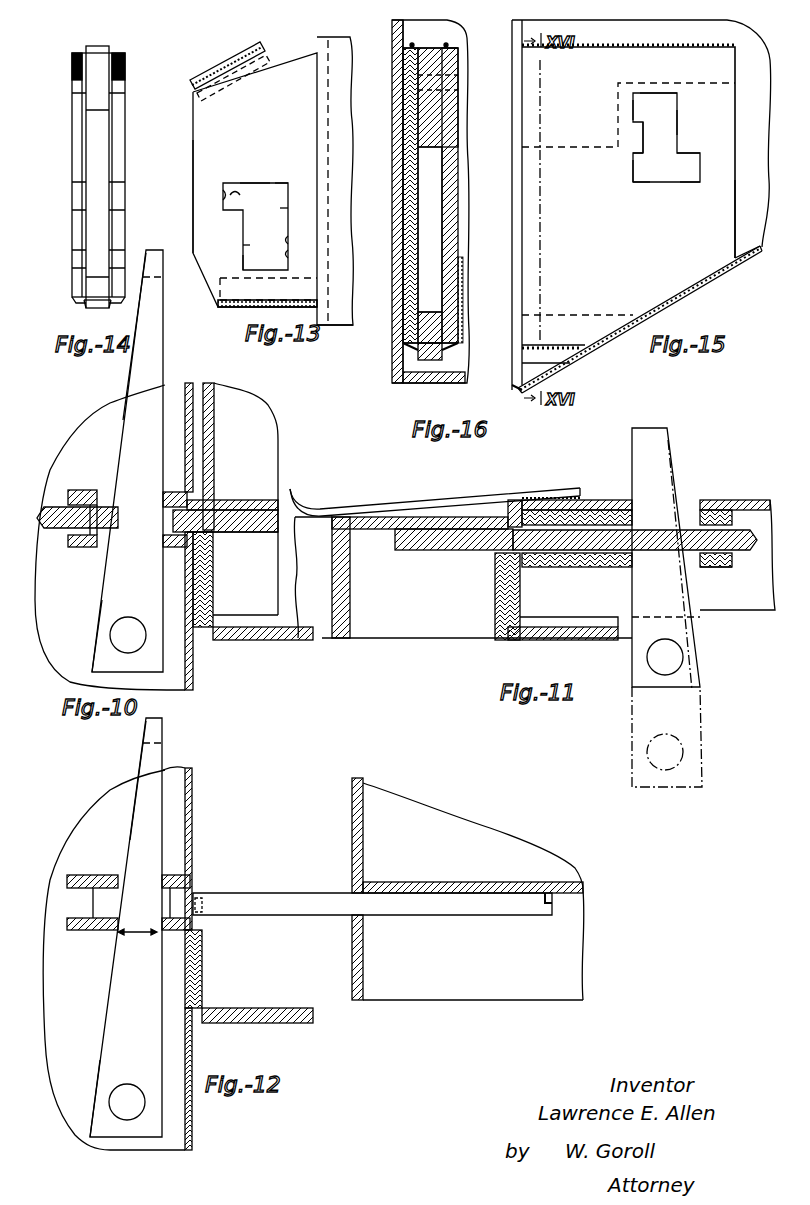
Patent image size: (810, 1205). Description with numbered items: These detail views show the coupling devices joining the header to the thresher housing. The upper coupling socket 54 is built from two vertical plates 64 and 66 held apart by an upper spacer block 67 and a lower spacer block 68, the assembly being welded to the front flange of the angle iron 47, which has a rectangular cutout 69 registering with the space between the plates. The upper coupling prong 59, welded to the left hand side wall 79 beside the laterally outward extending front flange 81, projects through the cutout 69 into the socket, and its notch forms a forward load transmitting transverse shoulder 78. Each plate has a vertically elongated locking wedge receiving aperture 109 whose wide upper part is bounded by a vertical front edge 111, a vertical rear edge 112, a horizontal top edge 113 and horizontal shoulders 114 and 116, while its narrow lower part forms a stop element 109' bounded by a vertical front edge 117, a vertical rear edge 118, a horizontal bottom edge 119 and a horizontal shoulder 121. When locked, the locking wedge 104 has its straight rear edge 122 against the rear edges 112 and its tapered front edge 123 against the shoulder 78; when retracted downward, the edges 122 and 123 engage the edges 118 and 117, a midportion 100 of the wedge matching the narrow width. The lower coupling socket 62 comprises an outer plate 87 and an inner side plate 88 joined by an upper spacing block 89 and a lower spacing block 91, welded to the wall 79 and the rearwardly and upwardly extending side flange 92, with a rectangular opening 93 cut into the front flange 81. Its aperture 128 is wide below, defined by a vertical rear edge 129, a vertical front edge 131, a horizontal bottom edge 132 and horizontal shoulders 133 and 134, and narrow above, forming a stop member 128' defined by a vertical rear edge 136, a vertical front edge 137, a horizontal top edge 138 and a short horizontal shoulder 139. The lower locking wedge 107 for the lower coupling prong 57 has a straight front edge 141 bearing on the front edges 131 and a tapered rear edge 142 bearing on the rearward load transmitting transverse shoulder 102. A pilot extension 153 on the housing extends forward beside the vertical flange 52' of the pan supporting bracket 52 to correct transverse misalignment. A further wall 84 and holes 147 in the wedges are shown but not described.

In FIG. 13, the angle iron 47 is at (340, 313).
In FIG. 10, the angle iron 47 is at (222, 641).
In FIG. 11, the angle iron 47 is at (537, 641).
In FIG. 12, the angle iron 47 is at (281, 1024).
In FIG. 11, the pan supporting bracket 52 is at (463, 577).
In FIG. 11, the vertical flange 52' is at (427, 499).
In FIG. 14, the upper coupling socket 54 is at (193, 153).
In FIG. 13, the upper coupling socket 54 is at (255, 189).
In FIG. 10, the upper coupling socket 54 is at (92, 488).
In FIG. 12, the upper coupling socket 54 is at (113, 870).
In FIG. 11, the lower coupling prong 57 is at (432, 550).
In FIG. 10, the upper coupling prong 59 is at (47, 530).
In FIG. 12, the upper coupling prong 59 is at (279, 915).
In FIG. 16, the lower coupling socket 62 is at (497, 242).
In FIG. 15, the lower coupling socket 62 is at (682, 276).
In FIG. 11, the lower coupling socket 62 is at (712, 570).
In FIG. 14, the vertical plate 64 is at (125, 118).
In FIG. 13, the vertical plate 64 is at (193, 190).
In FIG. 10, the vertical plate 64 is at (78, 549).
In FIG. 12, the vertical plate 64 is at (73, 931).
In FIG. 14, the vertical plate 66 is at (72, 118).
In FIG. 10, the vertical plate 66 is at (68, 493).
In FIG. 12, the vertical plate 66 is at (75, 875).
In FIG. 14, the upper spacer block 67 is at (104, 46).
In FIG. 13, the upper spacer block 67 is at (232, 63).
In FIG. 14, the lower spacer block 68 is at (86, 302).
In FIG. 13, the lower spacer block 68 is at (224, 306).
In FIG. 13, the rectangular cutout 69 is at (328, 242).
In FIG. 10, the rectangular cutout 69 is at (205, 530).
In FIG. 12, the rectangular cutout 69 is at (194, 911).
In FIG. 10, the transverse shoulder 78 is at (112, 518).
In FIG. 16, the left hand side wall 79 is at (393, 275).
In FIG. 15, the left hand side wall 79 is at (767, 137).
In FIG. 10, the left hand side wall 79 is at (252, 500).
In FIG. 11, the left hand side wall 79 is at (749, 500).
In FIG. 12, the left hand side wall 79 is at (405, 882).
In FIG. 15, the front flange 81 is at (512, 118).
In FIG. 10, the front flange 81 is at (214, 595).
In FIG. 11, the front flange 81 is at (520, 601).
In FIG. 12, the front flange 81 is at (364, 982).
In FIG. 12, the wall 84 is at (364, 841).
In FIG. 16, the outer plate 87 is at (448, 205).
In FIG. 15, the outer plate 87 is at (732, 222).
In FIG. 11, the outer plate 87 is at (722, 567).
In FIG. 16, the inner side plate 88 is at (404, 216).
In FIG. 11, the inner side plate 88 is at (713, 510).
In FIG. 16, the upper spacing block 89 is at (431, 48).
In FIG. 15, the upper spacing block 89 is at (568, 148).
In FIG. 16, the lower spacing block 91 is at (446, 352).
In FIG. 15, the lower spacing block 91 is at (568, 357).
In FIG. 16, the side flange 92 is at (411, 384).
In FIG. 15, the side flange 92 is at (752, 256).
In FIG. 15, the rectangular opening 93 is at (512, 312).
In FIG. 12, the midportion 100 is at (135, 935).
In FIG. 11, the transverse shoulder 102 is at (682, 540).
In FIG. 10, the locking wedge 104 is at (103, 610).
In FIG. 12, the locking wedge 104 is at (103, 1046).
In FIG. 11, the lower locking wedge 107 is at (695, 706).
In FIG. 13, the locking wedge receiving aperture 109 is at (250, 226).
In FIG. 13, the stop element 109' is at (226, 262).
In FIG. 13, the vertical front edge 111 is at (223, 197).
In FIG. 13, the vertical rear edge 112 is at (289, 185).
In FIG. 13, the horizontal top edge 113 is at (253, 183).
In FIG. 13, the horizontal shoulder 114 is at (250, 195).
In FIG. 13, the horizontal shoulder 116 is at (284, 207).
In FIG. 13, the vertical front edge 117 is at (247, 247).
In FIG. 13, the vertical rear edge 118 is at (289, 253).
In FIG. 13, the horizontal bottom edge 119 is at (252, 271).
In FIG. 13, the horizontal shoulder 121 is at (289, 239).
In FIG. 10, the straight rear edge 122 is at (164, 368).
In FIG. 12, the straight rear edge 122 is at (163, 753).
In FIG. 10, the tapered front edge 123 is at (132, 419).
In FIG. 12, the tapered front edge 123 is at (133, 808).
In FIG. 15, the vertically elongated aperture 128 is at (611, 204).
In FIG. 15, the stop member 128' is at (693, 77).
In FIG. 15, the vertical rear edge 129 is at (696, 182).
In FIG. 15, the vertical front edge 131 is at (633, 177).
In FIG. 15, the horizontal bottom edge 132 is at (641, 183).
In FIG. 15, the horizontal shoulder 133 is at (688, 153).
In FIG. 15, the horizontal shoulder 134 is at (640, 154).
In FIG. 15, the vertical rear edge 136 is at (678, 126).
In FIG. 15, the vertical front edge 137 is at (633, 110).
In FIG. 15, the horizontal top edge 138 is at (657, 93).
In FIG. 15, the short horizontal shoulder 139 is at (643, 125).
In FIG. 11, the straight front edge 141 is at (632, 462).
In FIG. 11, the tapered rear edge 142 is at (678, 447).
In FIG. 10, the pivot hole 147 is at (111, 641).
In FIG. 11, the pivot hole 147 is at (650, 662).
In FIG. 12, the pivot hole 147 is at (110, 1105).
In FIG. 11, the pilot extension 153 is at (397, 500).